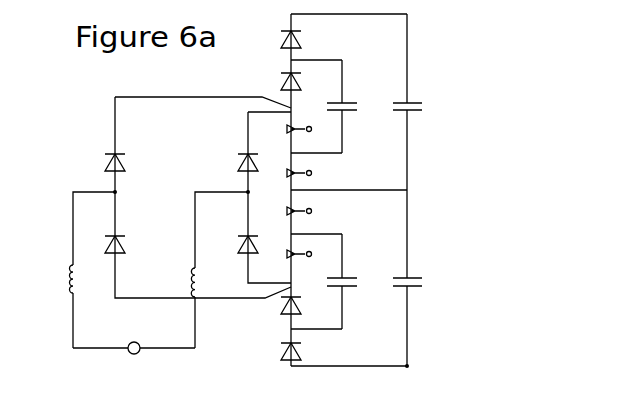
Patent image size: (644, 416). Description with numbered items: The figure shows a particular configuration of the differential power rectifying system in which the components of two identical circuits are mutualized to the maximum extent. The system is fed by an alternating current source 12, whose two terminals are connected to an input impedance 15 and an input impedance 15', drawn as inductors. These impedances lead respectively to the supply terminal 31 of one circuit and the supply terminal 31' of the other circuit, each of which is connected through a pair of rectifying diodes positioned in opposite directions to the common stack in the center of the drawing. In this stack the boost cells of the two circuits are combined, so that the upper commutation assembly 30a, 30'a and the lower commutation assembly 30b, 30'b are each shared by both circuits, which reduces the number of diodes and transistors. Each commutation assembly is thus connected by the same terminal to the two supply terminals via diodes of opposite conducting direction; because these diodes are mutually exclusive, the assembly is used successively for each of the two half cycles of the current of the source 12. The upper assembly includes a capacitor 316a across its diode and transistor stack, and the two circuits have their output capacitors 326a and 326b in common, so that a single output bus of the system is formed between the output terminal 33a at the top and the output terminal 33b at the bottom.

The alternating current source 12 is at (134, 361).
The input impedance 15 is at (202, 270).
The input impedance 15' is at (80, 270).
The supply terminal 31 is at (264, 197).
The supply terminal 31' is at (198, 197).
The commutation assembly 30a is at (405, 102).
The commutation assembly 30'a is at (405, 102).
The commutation assembly 30b is at (405, 278).
The commutation assembly 30'b is at (405, 278).
The capacitor 316a is at (353, 106).
The output capacitor 326a is at (419, 102).
The output capacitor 326b is at (419, 278).
The output terminal 33a is at (355, 7).
The output terminal 33b is at (358, 377).